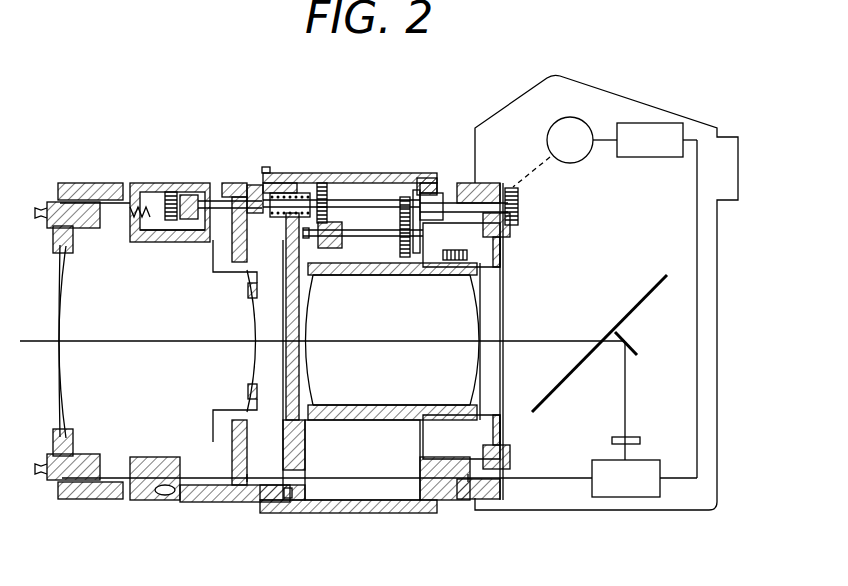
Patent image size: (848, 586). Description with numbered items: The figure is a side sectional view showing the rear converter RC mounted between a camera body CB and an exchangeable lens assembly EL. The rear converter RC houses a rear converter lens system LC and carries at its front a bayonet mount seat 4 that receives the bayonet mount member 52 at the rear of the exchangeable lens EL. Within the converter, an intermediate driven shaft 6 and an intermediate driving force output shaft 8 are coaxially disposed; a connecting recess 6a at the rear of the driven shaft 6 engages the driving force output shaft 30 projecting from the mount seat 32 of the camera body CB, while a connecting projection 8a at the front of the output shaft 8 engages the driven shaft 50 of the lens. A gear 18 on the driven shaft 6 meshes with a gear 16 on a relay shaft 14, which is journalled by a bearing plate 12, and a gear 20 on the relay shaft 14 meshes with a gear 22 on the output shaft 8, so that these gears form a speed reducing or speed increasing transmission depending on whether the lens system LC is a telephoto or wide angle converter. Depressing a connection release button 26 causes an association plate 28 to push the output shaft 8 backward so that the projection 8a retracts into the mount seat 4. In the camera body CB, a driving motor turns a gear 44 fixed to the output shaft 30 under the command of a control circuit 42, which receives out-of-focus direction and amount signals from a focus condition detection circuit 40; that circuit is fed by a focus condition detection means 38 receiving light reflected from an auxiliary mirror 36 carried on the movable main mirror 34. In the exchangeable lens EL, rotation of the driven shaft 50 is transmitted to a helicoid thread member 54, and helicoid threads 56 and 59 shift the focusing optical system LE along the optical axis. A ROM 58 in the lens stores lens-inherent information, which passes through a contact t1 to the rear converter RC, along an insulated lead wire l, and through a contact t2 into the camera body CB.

The exchangeable lens assembly EL is at (90, 180).
The focusing optical system LE is at (168, 332).
The rear converter lens system LC is at (408, 332).
The camera body CB is at (614, 94).
The rear converter RC is at (373, 518).
The bayonet mount seat 4 is at (270, 190).
The intermediate driven shaft 6 is at (445, 262).
The connecting recess 6a is at (497, 228).
The intermediate driving force output shaft 8 is at (260, 200).
The connecting projection 8a is at (230, 215).
The bearing plate 12 is at (310, 177).
The relay shaft 14 is at (355, 230).
The gear 16 is at (400, 220).
The gear 18 is at (408, 258).
The gear 20 is at (322, 222).
The gear 22 is at (300, 210).
The connection release button 26 is at (266, 167).
The association plate 28 is at (243, 263).
The driving force output shaft 30 is at (494, 202).
The mount seat 32 is at (470, 250).
The movable main mirror 34 is at (647, 293).
The auxiliary mirror 36 is at (634, 348).
The focus condition detection means 38 is at (612, 440).
The focus condition detection circuit 40 is at (643, 468).
The control circuit 42 is at (642, 157).
The gear 44 is at (519, 205).
The driven shaft 50 is at (192, 195).
The bayonet mount member 52 is at (235, 198).
The helicoid thread member 54 is at (132, 183).
The helicoid thread 56 is at (140, 240).
The ROM 58 is at (167, 496).
The helicoid thread 59 is at (160, 192).
The lead wire l is at (350, 480).
The contact t1 is at (247, 482).
The contact t2 is at (468, 482).